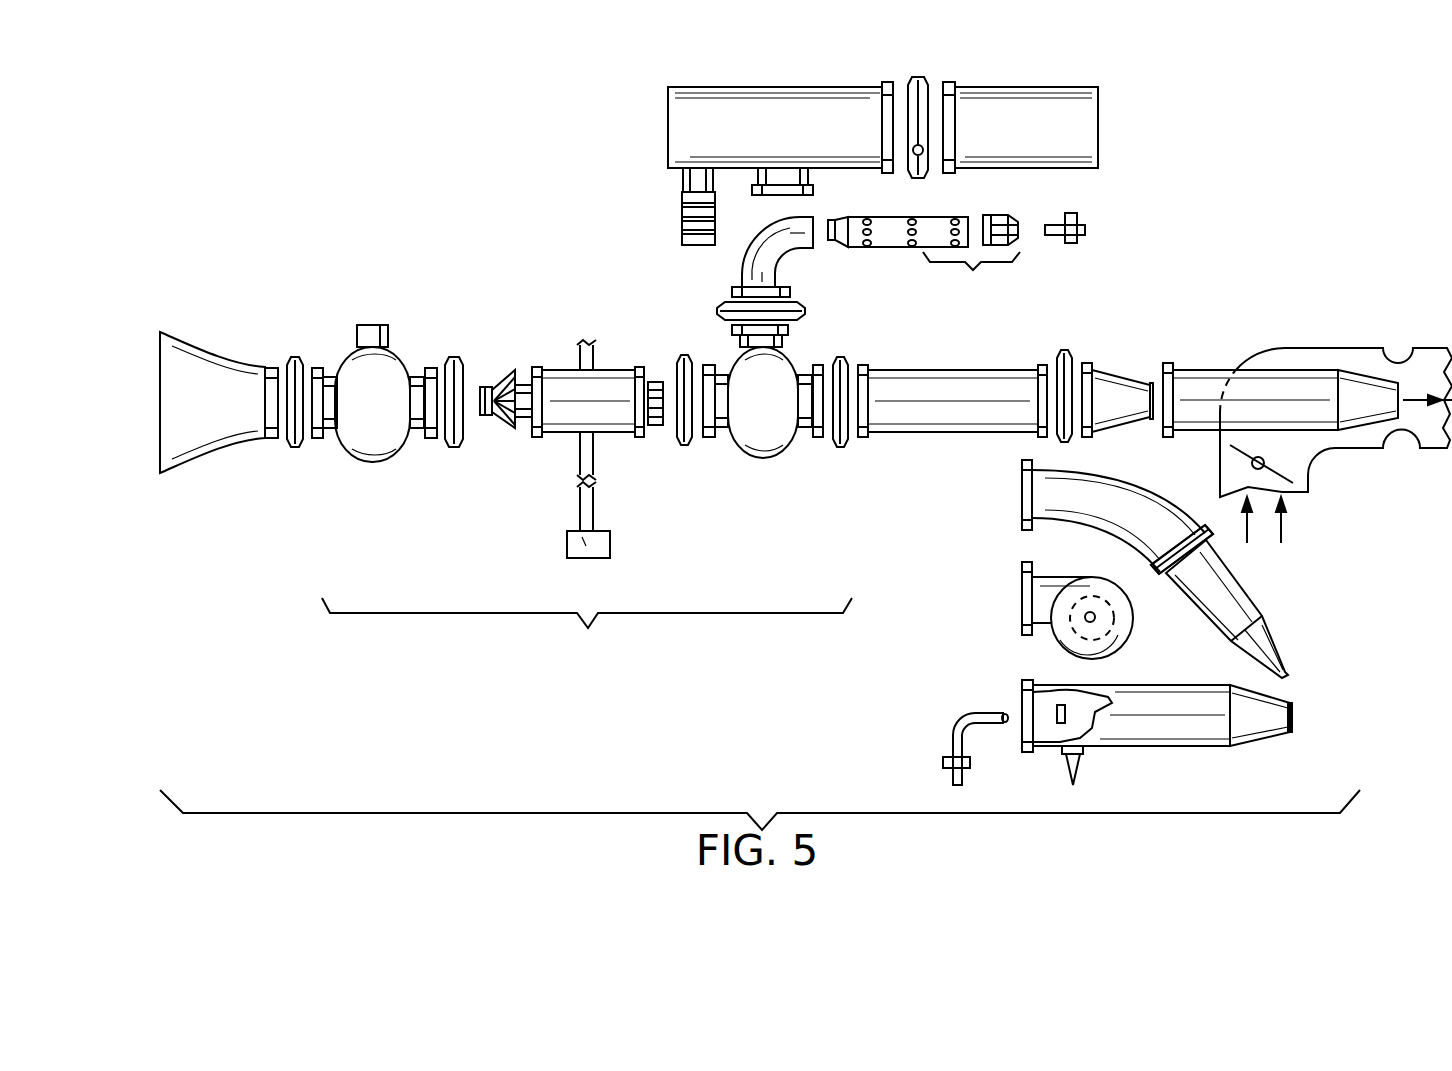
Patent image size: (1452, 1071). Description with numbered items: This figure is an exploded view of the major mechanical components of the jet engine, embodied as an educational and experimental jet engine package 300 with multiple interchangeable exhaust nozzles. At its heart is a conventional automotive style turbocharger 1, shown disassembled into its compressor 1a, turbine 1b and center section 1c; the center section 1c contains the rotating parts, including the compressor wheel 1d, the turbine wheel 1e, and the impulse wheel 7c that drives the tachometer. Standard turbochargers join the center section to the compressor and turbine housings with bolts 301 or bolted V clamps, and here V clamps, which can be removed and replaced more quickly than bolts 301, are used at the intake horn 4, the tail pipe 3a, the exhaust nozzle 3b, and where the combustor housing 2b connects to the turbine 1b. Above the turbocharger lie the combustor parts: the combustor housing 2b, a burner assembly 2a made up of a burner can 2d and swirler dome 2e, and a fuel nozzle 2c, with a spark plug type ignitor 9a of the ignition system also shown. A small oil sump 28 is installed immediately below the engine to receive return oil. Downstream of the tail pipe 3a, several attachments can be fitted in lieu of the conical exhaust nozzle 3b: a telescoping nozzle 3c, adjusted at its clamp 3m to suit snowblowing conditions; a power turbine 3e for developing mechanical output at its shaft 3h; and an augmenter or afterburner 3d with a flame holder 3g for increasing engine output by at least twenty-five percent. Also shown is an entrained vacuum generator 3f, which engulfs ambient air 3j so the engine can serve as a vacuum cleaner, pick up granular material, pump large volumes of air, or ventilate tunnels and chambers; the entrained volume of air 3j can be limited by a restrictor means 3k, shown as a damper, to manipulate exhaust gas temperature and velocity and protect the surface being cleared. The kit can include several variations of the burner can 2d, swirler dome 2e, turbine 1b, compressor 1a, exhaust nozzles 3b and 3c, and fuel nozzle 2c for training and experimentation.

The turbocharger 1 is at (587, 629).
The compressor assembly 1a is at (375, 462).
The turbine assembly 1b is at (778, 441).
The center assembly 1c is at (614, 370).
The compressor wheel 1d is at (505, 428).
The turbine wheel 1e is at (658, 426).
The burner assembly 2a is at (971, 278).
The combustor housing 2b is at (1100, 142).
The fuel nozzle 2c is at (1085, 219).
The burner can 2d is at (916, 211).
The swirler dome 2e is at (1012, 220).
The tail pipe 3a is at (985, 372).
The exhaust nozzle 3b is at (1110, 372).
The telescoping nozzle 3c is at (1240, 585).
The augmenter (afterburner) 3d is at (1195, 748).
The power turbine 3e is at (1060, 645).
The entrained vacuum generator 3f is at (1340, 450).
The flame holder 3g is at (1057, 714).
The shaft 3h is at (1095, 618).
The ambient air 3j is at (1292, 531).
The restrictor means 3k is at (1240, 455).
The clamp 3m is at (1158, 567).
The horn 4 is at (240, 372).
The impulse wheel 7c is at (486, 417).
The spark plug type ignitor 9a is at (1077, 772).
The oil sump 28 is at (592, 548).
The jet engine package 300 is at (930, 480).
The bolts 301 is at (290, 445).